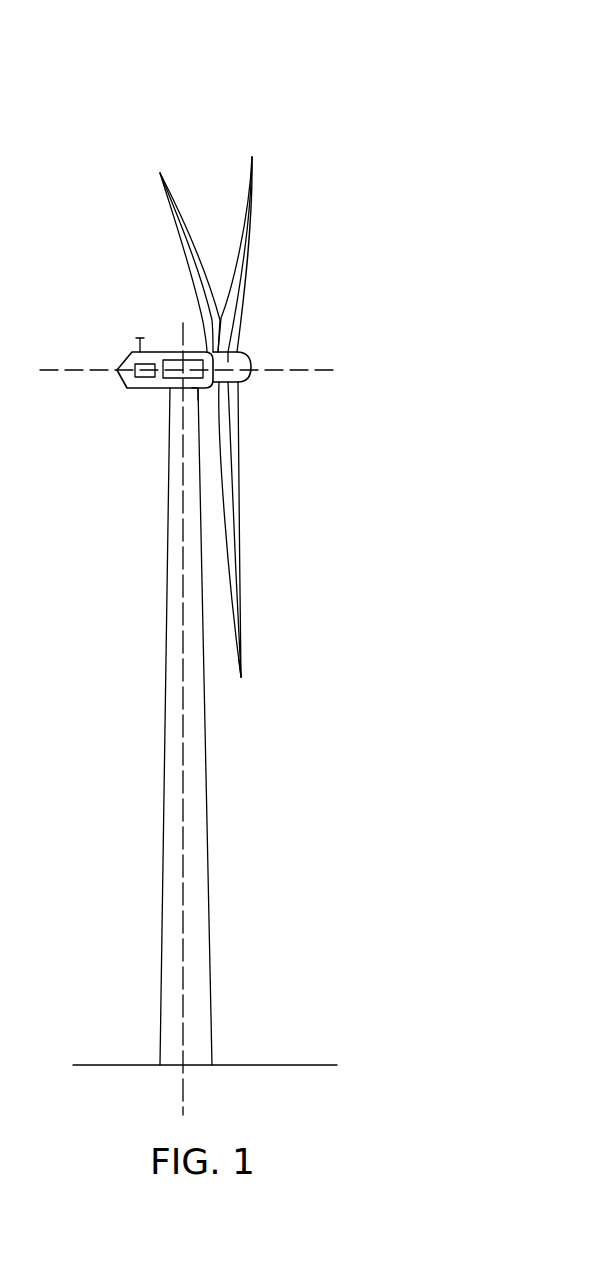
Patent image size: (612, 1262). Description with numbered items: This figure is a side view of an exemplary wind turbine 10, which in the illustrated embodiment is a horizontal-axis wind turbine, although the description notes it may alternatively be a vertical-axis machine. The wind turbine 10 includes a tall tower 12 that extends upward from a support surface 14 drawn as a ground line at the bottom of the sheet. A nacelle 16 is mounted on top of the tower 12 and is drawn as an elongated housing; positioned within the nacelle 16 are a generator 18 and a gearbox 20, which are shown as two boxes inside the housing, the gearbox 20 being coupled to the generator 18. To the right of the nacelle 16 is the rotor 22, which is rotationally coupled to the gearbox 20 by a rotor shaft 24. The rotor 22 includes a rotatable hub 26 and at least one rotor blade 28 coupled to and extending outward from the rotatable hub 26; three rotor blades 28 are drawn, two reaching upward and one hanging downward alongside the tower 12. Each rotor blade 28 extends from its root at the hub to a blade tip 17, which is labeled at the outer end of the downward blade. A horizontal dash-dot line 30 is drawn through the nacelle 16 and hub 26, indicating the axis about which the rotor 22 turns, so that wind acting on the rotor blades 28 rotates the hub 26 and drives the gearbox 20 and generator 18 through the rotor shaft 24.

The wind turbine 10 is at (404, 57).
The tower 12 is at (163, 830).
The support surface 14 is at (115, 1063).
The nacelle 16 is at (135, 387).
The blade tip 17 is at (243, 677).
The generator 18 is at (131, 351).
The gearbox 20 is at (168, 349).
The rotor 22 is at (262, 350).
The rotor shaft 24 is at (198, 393).
The rotatable hub 26 is at (248, 376).
The rotor blade 28 is at (179, 226).
The rotor axis 30 is at (312, 371).